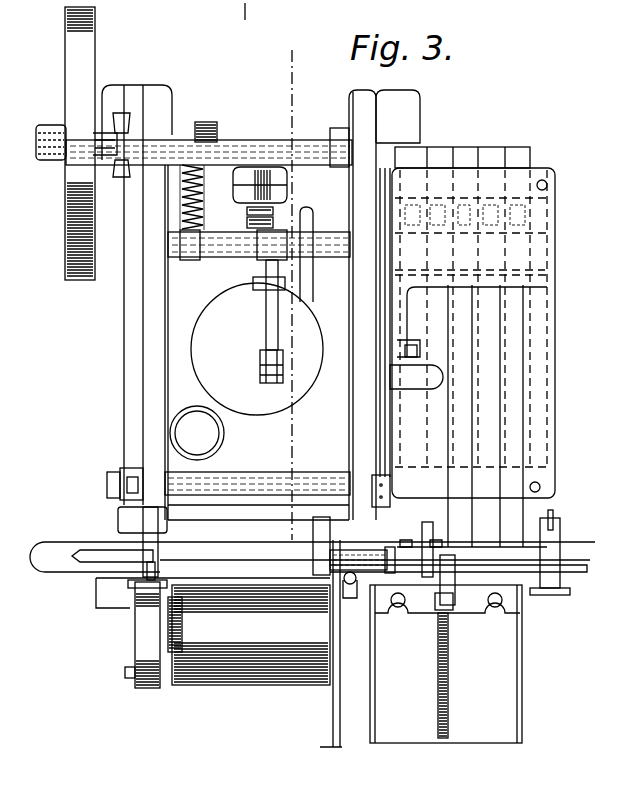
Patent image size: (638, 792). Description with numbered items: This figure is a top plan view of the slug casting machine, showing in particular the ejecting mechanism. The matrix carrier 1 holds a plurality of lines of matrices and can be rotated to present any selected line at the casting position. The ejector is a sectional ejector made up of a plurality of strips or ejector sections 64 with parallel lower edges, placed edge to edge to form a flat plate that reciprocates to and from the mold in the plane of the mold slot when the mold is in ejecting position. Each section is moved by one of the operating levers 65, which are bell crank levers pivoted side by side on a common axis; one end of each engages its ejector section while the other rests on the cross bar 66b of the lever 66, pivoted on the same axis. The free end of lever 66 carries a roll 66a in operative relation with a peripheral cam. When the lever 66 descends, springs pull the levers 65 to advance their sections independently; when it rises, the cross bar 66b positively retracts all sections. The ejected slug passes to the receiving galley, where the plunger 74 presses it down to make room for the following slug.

The matrix carrier 1 is at (232, 695).
The ejector sections 64 is at (510, 528).
The operating levers 65 is at (540, 268).
The lever 66 is at (398, 198).
The roll 66a is at (450, 372).
The cross bar 66b is at (450, 292).
The plunger 74 is at (472, 608).